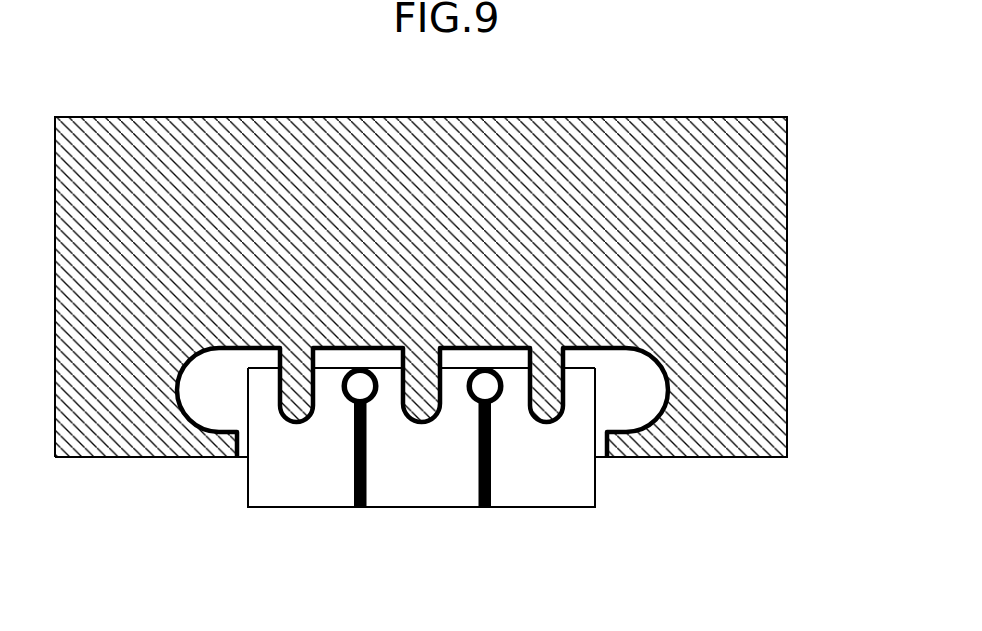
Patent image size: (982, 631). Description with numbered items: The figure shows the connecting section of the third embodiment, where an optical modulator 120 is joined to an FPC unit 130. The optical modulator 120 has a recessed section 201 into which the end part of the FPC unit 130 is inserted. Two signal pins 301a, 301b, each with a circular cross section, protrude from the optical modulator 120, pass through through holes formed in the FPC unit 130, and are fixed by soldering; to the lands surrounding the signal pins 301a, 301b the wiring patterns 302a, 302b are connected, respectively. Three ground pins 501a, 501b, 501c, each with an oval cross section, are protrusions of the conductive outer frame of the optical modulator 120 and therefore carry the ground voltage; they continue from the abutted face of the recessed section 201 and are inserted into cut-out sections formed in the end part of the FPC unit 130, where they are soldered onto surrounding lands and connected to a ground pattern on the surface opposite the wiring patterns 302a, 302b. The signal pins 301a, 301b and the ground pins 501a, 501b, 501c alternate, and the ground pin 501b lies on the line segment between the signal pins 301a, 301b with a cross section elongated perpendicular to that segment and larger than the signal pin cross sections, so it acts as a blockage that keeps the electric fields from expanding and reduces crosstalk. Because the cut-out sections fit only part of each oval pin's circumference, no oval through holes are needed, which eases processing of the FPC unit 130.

The optical modulator 120 is at (723, 97).
The recessed section 201 is at (652, 378).
The FPC unit 130 is at (597, 478).
The ground pin 501a is at (296, 430).
The ground pin 501b is at (420, 427).
The ground pin 501c is at (556, 428).
The signal pin 301a is at (353, 393).
The signal pin 301b is at (497, 400).
The wiring pattern 302a is at (358, 508).
The wiring pattern 302b is at (484, 508).